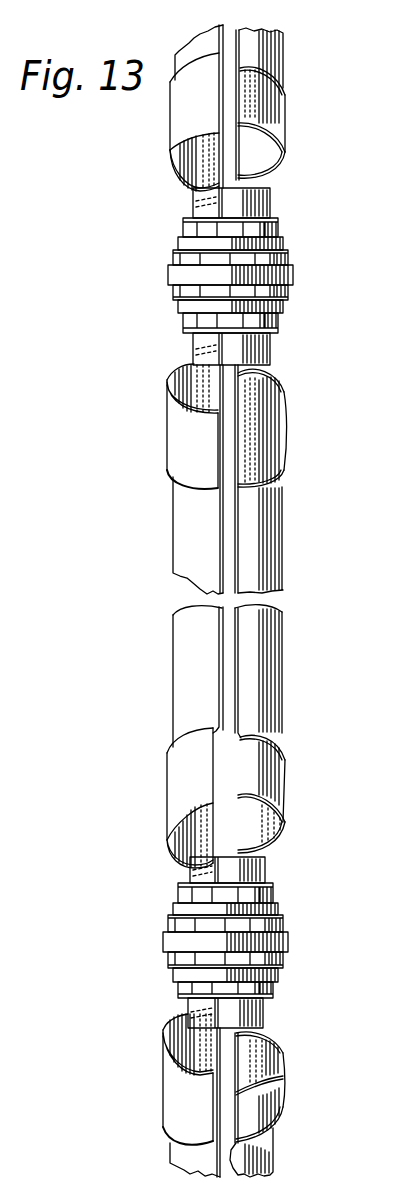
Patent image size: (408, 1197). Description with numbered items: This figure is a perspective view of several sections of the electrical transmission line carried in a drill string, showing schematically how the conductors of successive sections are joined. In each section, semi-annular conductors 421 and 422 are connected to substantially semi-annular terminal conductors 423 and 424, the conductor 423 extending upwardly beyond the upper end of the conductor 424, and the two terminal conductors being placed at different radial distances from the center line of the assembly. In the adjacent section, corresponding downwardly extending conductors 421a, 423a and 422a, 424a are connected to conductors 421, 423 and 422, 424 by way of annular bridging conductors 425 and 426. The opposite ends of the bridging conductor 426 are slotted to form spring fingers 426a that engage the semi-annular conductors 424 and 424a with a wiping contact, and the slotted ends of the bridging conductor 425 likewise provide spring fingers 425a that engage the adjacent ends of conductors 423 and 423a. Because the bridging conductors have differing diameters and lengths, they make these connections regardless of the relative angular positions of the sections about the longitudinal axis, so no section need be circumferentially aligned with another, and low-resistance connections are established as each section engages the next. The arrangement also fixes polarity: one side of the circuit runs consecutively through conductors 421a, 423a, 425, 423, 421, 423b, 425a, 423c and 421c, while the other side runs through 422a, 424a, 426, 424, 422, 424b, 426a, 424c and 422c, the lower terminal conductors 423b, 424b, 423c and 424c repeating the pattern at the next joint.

The conductor 421 is at (185, 623).
The downwardly extending conductor 421a is at (187, 48).
The conductor 421c is at (178, 1148).
The conductor 422 is at (262, 622).
The downwardly extending conductor 422a is at (286, 61).
The conductor 422c is at (274, 1158).
The semi-annular terminal conductor 423 is at (178, 430).
The semi-annular terminal conductor 423a is at (172, 139).
The semi-annular terminal conductor 423b is at (172, 775).
The semi-annular terminal conductor 423c is at (175, 1100).
The semi-annular terminal conductor 424 is at (270, 434).
The semi-annular terminal conductor 424a is at (288, 133).
The semi-annular terminal conductor 424b is at (281, 797).
The semi-annular terminal conductor 424c is at (275, 1083).
The annular bridging conductor 425 is at (289, 295).
The spring fingers 425a is at (285, 962).
The annular bridging conductor 426 is at (187, 322).
The spring fingers 426a is at (182, 993).